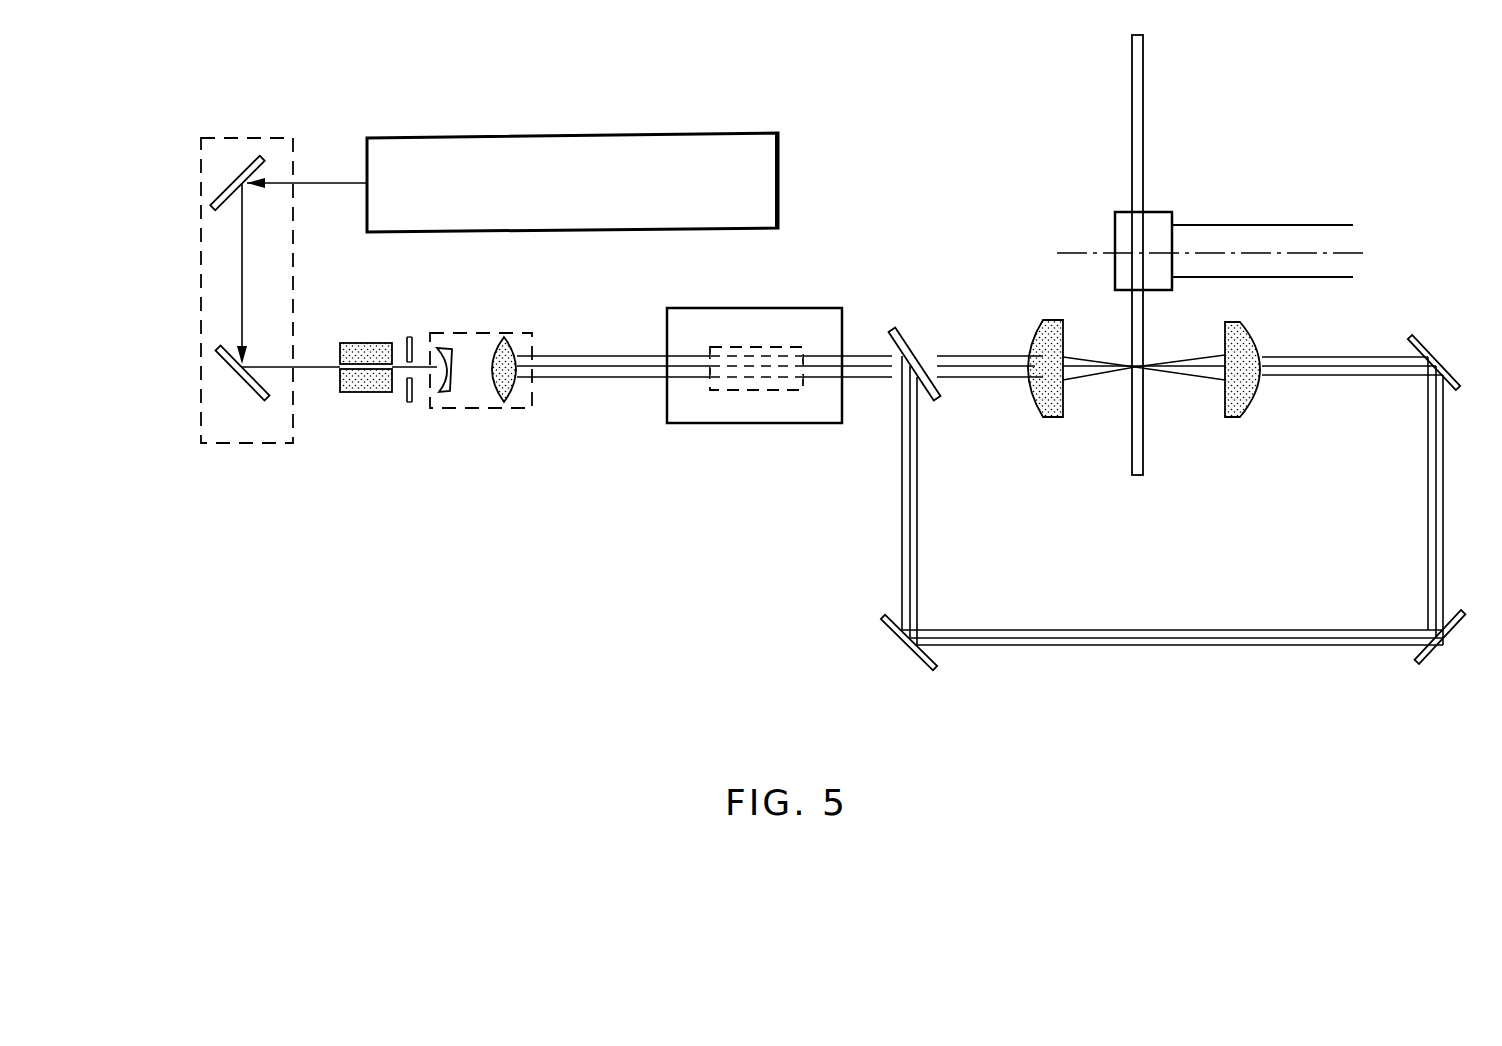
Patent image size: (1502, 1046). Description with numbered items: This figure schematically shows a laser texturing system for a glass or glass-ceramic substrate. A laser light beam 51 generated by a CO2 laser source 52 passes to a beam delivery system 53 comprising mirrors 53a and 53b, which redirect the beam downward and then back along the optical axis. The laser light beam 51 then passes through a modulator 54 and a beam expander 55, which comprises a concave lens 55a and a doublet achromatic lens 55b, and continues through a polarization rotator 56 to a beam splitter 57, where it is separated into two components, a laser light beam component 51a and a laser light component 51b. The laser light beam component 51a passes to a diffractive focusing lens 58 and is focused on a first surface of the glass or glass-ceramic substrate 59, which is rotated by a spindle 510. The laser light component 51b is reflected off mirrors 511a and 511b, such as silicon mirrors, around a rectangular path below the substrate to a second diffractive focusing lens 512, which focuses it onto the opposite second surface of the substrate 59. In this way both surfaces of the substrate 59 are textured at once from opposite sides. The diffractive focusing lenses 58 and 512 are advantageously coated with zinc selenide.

The laser light beam 51 is at (326, 181).
The laser light beam component 51a is at (1190, 485).
The laser light component 51b is at (1150, 500).
The CO2 laser source 52 is at (550, 133).
The beam delivery system 53 is at (232, 133).
The mirror 53a is at (227, 193).
The mirror 53b is at (222, 363).
The modulator 54 is at (372, 393).
The beam expander 55 is at (453, 409).
The concave lens 55a is at (447, 394).
The doublet achromatic lens 55b is at (510, 394).
The polarization rotator 56 is at (737, 424).
The beam splitter 57 is at (908, 332).
The diffractive focusing lens 58 is at (1045, 320).
The glass or glass-ceramic substrate 59 is at (1137, 477).
The spindle 510 is at (1255, 225).
The mirror 511a is at (1437, 363).
The mirror 511b is at (1447, 633).
The second diffractive focusing lens 512 is at (1238, 323).